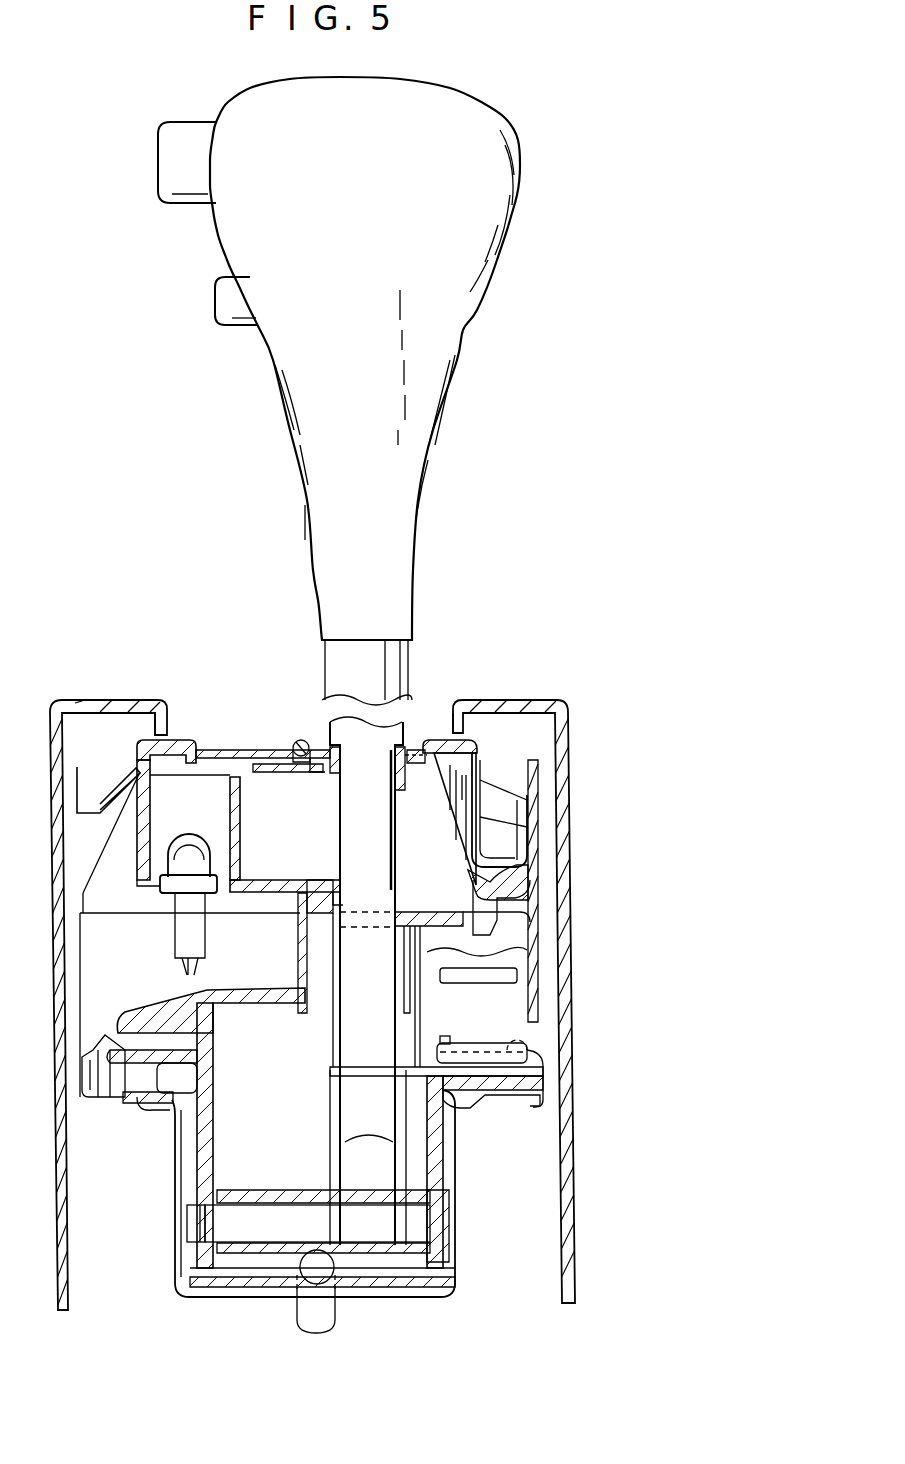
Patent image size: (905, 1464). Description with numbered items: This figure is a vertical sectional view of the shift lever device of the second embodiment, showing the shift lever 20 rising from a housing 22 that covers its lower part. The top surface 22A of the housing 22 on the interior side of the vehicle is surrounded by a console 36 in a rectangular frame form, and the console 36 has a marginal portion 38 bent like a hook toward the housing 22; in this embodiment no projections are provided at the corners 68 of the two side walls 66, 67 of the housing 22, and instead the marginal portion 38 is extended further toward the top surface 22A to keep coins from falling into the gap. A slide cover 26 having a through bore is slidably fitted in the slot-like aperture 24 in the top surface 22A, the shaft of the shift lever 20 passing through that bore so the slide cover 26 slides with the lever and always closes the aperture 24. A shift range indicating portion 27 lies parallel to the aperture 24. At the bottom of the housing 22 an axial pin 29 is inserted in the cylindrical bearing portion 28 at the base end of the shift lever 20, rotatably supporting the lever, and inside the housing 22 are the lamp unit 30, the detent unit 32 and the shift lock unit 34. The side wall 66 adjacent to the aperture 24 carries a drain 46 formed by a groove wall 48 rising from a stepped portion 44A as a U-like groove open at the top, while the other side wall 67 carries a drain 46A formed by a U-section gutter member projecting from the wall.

The shift lever 20 is at (440, 346).
The housing 22 is at (190, 738).
The top surface 22A is at (435, 748).
The aperture 24 is at (412, 742).
The slide cover 26 is at (316, 742).
The shift range indicating portion 27 is at (237, 748).
The cylindrical bearing portion 28 is at (250, 1193).
The axial pin 29 is at (397, 1225).
The lamp unit 30 is at (197, 858).
The detent unit 32 is at (427, 952).
The shift lock unit 34 is at (493, 1012).
The console 36 is at (470, 745).
The marginal portion 38 is at (154, 733).
The stepped portion 44A is at (548, 700).
The drain 46 is at (555, 935).
The drain 46A is at (100, 793).
The groove wall 48 is at (540, 780).
The side wall 66 is at (483, 778).
The side wall 67 is at (133, 760).
The corners 68 is at (140, 743).